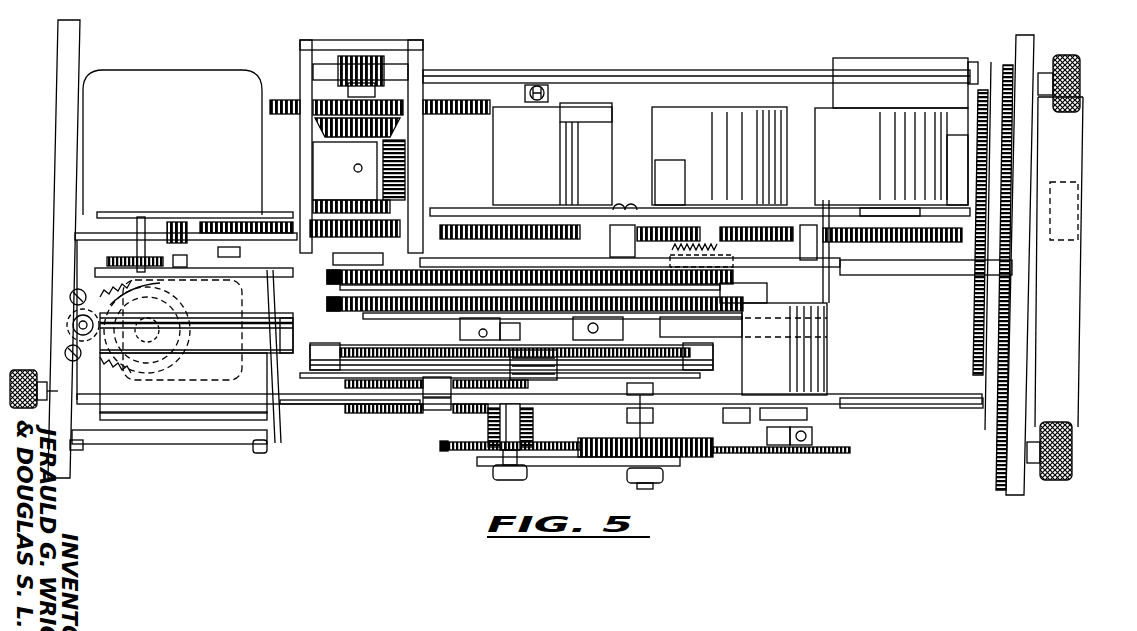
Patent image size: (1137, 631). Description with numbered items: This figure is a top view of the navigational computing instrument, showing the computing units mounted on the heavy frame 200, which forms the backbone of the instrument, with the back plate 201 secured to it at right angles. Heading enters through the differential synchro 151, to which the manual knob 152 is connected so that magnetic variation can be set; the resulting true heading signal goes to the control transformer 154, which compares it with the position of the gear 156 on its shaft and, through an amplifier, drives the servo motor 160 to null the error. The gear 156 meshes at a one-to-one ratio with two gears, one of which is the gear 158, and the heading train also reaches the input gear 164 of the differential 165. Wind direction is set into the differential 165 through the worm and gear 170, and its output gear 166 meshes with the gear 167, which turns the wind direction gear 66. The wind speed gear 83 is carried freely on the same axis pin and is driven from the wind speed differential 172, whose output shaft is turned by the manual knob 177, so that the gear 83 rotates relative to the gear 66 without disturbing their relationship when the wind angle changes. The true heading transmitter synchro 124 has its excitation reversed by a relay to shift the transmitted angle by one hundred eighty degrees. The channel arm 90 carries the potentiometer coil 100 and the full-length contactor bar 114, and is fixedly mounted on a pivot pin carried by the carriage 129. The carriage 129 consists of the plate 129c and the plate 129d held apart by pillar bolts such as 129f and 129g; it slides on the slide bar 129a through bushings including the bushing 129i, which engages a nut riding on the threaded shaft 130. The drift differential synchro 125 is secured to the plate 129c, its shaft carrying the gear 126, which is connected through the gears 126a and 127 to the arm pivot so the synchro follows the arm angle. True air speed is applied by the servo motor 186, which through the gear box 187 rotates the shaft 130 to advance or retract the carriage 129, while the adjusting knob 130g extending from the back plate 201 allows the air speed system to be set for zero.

The servo motor 186 is at (210, 82).
The output gear 166 is at (283, 100).
The differential 165 is at (377, 44).
The worm and gear 170 is at (380, 60).
The gear 167 is at (473, 103).
The input gear 164 is at (327, 203).
The control transformer 154 is at (707, 115).
The gear 156 is at (687, 210).
The wind speed differential 172 is at (735, 243).
The true heading transmitter synchro 124 is at (853, 115).
The differential synchro 151 is at (930, 53).
The manual knob 177 is at (1080, 72).
The gear 158 is at (872, 210).
The wind speed gear 83 is at (327, 277).
The wind direction gear 66 is at (327, 304).
The potentiometer coil 100 is at (363, 348).
The channel arm 90 is at (310, 350).
The adjusting knob 130g is at (30, 363).
The drift differential synchro 125 is at (827, 357).
The heavy frame 200 is at (938, 265).
The shaft 130 is at (112, 407).
The contactor bar 114 is at (660, 373).
The pillar bolt 129g is at (532, 425).
The pillar bolt 129f is at (653, 430).
The bushing 129i is at (423, 410).
The carriage 129 is at (428, 413).
The gear 127 is at (443, 445).
The plate 129d is at (475, 457).
The slide bar 129a is at (297, 407).
The plate 129c is at (865, 410).
The gear 126 is at (833, 453).
The gear 126a is at (698, 457).
The manual knob 152 is at (1072, 450).
The back plate 201 is at (68, 480).
The servo motor 160 is at (182, 407).
The gear box 187 is at (217, 417).